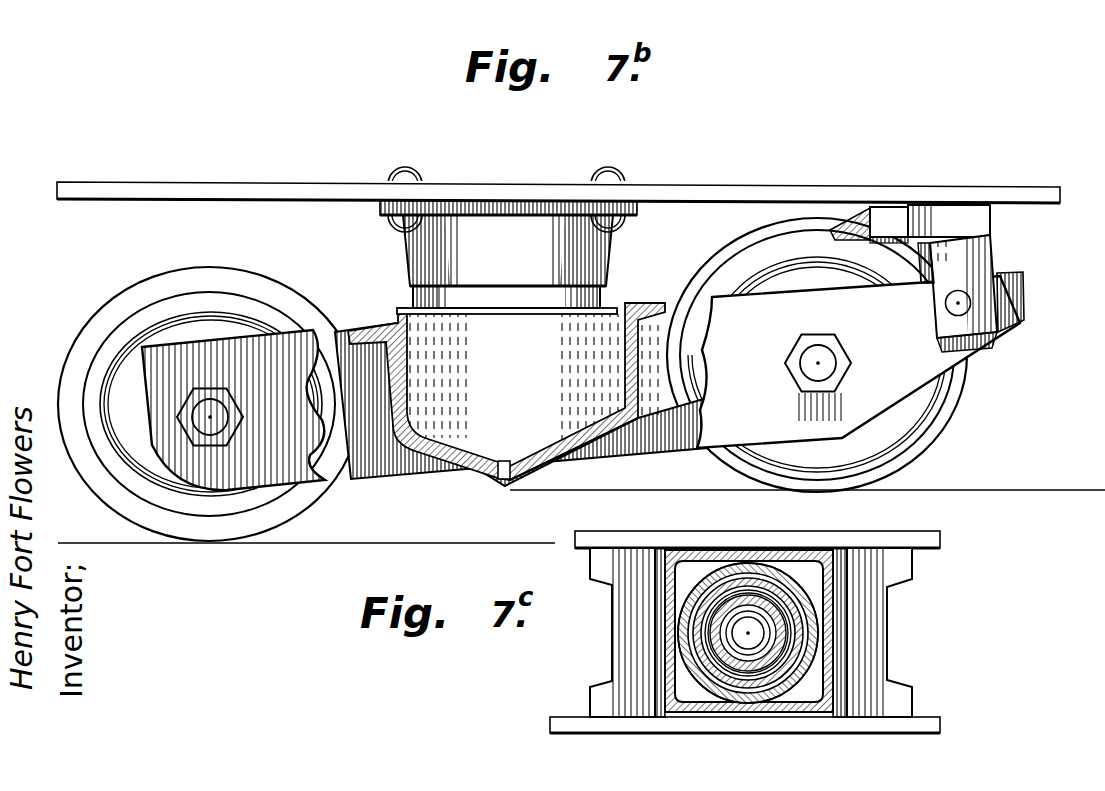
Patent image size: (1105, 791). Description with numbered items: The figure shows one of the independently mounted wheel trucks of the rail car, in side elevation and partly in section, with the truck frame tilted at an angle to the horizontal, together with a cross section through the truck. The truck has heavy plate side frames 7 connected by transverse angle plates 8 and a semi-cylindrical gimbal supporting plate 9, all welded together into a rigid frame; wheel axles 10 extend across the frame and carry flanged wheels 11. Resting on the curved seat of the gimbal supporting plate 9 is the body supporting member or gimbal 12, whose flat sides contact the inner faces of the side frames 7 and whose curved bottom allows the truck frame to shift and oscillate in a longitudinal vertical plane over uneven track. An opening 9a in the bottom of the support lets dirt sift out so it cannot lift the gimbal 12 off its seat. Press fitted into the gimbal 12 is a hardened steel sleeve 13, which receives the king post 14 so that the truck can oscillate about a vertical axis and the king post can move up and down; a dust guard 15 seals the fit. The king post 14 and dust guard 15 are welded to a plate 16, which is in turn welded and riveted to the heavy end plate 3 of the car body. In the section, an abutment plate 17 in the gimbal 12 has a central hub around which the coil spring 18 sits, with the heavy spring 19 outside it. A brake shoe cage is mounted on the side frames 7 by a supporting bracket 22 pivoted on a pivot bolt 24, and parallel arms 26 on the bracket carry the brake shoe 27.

In FIG. 7B, the heavy end plate 3 is at (503, 184).
In FIG. 7B, the side frame 7 is at (360, 345).
In FIG. 7C, the side frame 7 is at (700, 540).
In FIG. 7B, the transverse angle plate 8 is at (640, 388).
In FIG. 7C, the transverse angle plate 8 is at (640, 612).
In FIG. 7B, the gimbal supporting plate 9 is at (551, 460).
In FIG. 7B, the opening 9a is at (505, 470).
In FIG. 7B, the wheel axle 10 is at (218, 392).
In FIG. 7B, the flanged wheel 11 is at (100, 320).
In FIG. 7B, the body supporting member or gimbal 12 is at (620, 315).
In FIG. 7C, the body supporting member or gimbal 12 is at (826, 592).
In FIG. 7B, the hardened steel sleeve 13 is at (435, 292).
In FIG. 7C, the hardened steel sleeve 13 is at (848, 602).
In FIG. 7C, the king post 14 is at (780, 575).
In FIG. 7B, the dust guard 15 is at (590, 254).
In FIG. 7B, the plate 16 is at (562, 205).
In FIG. 7C, the abutment plate 17 is at (740, 633).
In FIG. 7C, the coil spring 18 is at (718, 660).
In FIG. 7C, the heavy spring 19 is at (736, 580).
In FIG. 7B, the supporting bracket 22 is at (993, 253).
In FIG. 7B, the pivot bolt 24 is at (962, 304).
In FIG. 7B, the arm 26 is at (945, 218).
In FIG. 7B, the brake shoe 27 is at (836, 225).